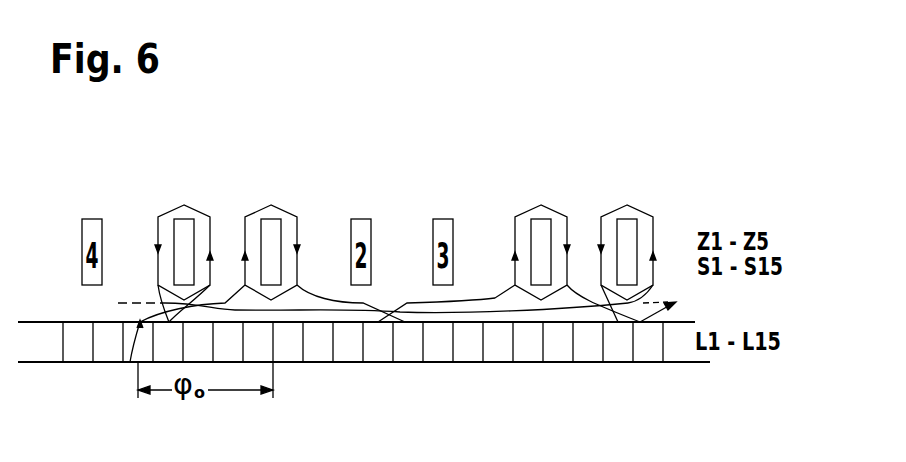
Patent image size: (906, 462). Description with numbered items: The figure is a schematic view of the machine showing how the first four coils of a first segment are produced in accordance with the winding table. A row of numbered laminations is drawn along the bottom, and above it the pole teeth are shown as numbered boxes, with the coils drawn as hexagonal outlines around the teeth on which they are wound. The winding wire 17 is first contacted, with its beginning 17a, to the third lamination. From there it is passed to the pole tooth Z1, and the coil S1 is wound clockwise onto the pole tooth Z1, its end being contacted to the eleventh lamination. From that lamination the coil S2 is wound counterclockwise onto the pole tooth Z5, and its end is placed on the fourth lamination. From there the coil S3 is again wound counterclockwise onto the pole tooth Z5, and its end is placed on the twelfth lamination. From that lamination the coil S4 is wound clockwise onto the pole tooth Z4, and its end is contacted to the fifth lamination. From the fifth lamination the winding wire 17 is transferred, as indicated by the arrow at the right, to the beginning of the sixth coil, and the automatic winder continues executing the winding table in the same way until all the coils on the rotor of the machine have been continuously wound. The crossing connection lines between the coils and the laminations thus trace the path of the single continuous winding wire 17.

The winding wire 17 is at (287, 363).
The beginning of the winding wire 17a is at (130, 362).
The coil S1 is at (262, 207).
The coil S2 is at (617, 206).
The coil S3 is at (173, 210).
The coil S4 is at (535, 208).
The pole tooth Z1 is at (277, 215).
The pole tooth Z4 is at (548, 213).
The pole tooth Z5 is at (188, 217).